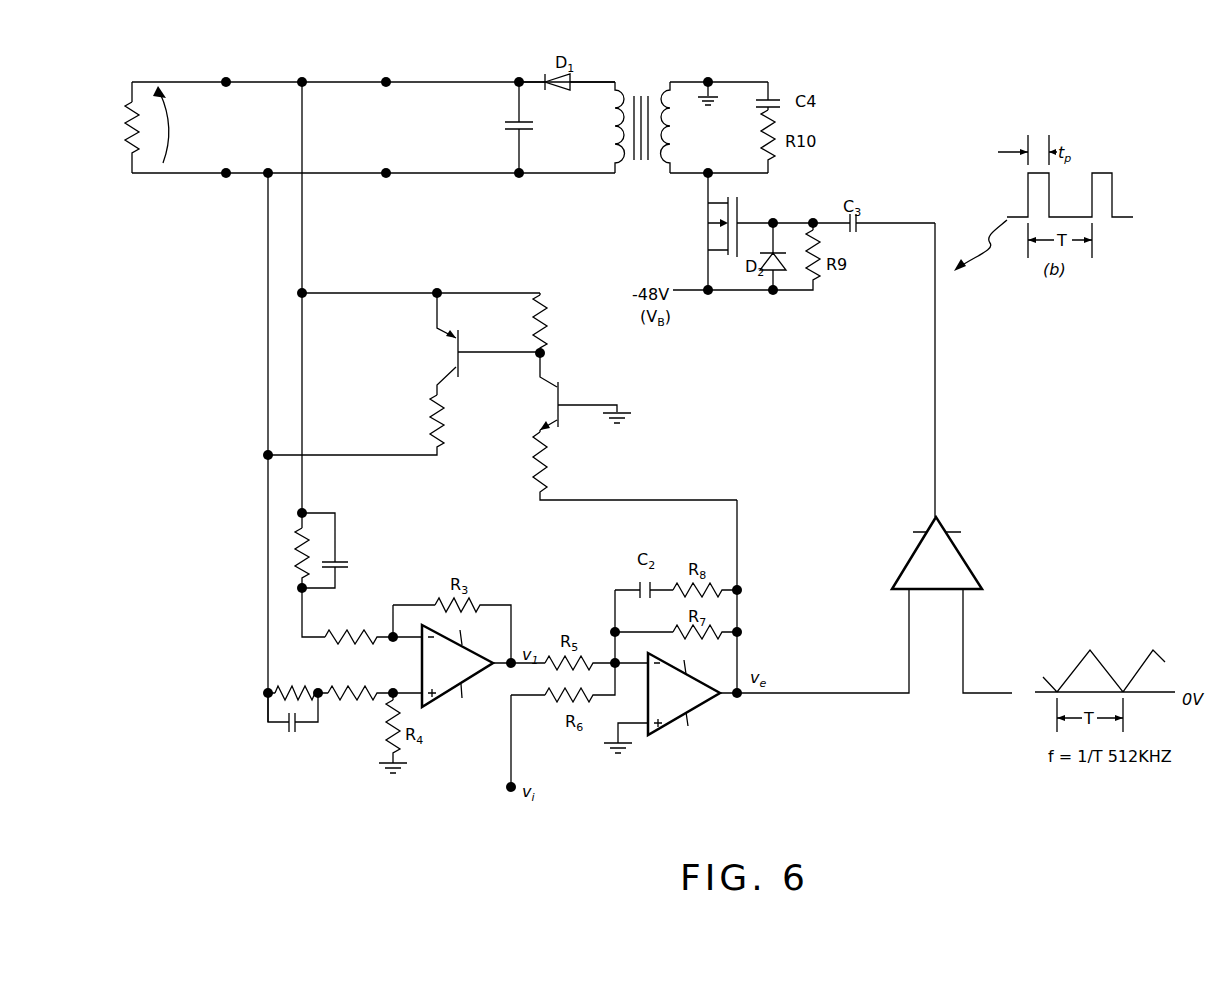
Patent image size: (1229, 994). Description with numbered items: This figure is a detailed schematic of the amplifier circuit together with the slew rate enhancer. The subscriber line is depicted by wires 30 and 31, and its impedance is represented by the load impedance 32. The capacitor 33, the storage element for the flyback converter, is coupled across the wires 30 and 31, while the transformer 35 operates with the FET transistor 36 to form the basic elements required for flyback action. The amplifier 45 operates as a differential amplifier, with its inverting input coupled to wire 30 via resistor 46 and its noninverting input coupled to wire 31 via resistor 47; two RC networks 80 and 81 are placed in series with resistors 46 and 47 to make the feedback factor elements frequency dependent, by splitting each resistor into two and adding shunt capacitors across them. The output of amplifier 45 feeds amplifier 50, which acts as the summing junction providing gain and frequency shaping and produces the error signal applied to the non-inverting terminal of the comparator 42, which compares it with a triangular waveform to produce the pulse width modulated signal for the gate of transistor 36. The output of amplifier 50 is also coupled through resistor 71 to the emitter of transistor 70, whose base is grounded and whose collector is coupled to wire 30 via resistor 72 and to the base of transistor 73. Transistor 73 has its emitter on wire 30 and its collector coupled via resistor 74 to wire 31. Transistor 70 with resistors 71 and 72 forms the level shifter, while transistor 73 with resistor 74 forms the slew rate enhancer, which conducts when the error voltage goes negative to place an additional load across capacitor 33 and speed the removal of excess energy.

The subscriber line wire 30 is at (388, 80).
The subscriber line wire 31 is at (386, 171).
The load impedance 32 is at (128, 108).
The capacitor 33 is at (504, 127).
The transformer 35 is at (650, 84).
The FET transistor 36 is at (742, 217).
The comparator 42 is at (966, 570).
The amplifier A1 45 is at (430, 702).
The resistor 46 is at (368, 630).
The resistor 47 is at (372, 690).
The amplifier A2 50 is at (661, 728).
The transistor 70 is at (558, 396).
The resistor 71 is at (532, 466).
The resistor 72 is at (546, 307).
The transistor 73 is at (450, 362).
The resistor 74 is at (443, 442).
The RC network 80 is at (302, 688).
The RC network 81 is at (340, 557).